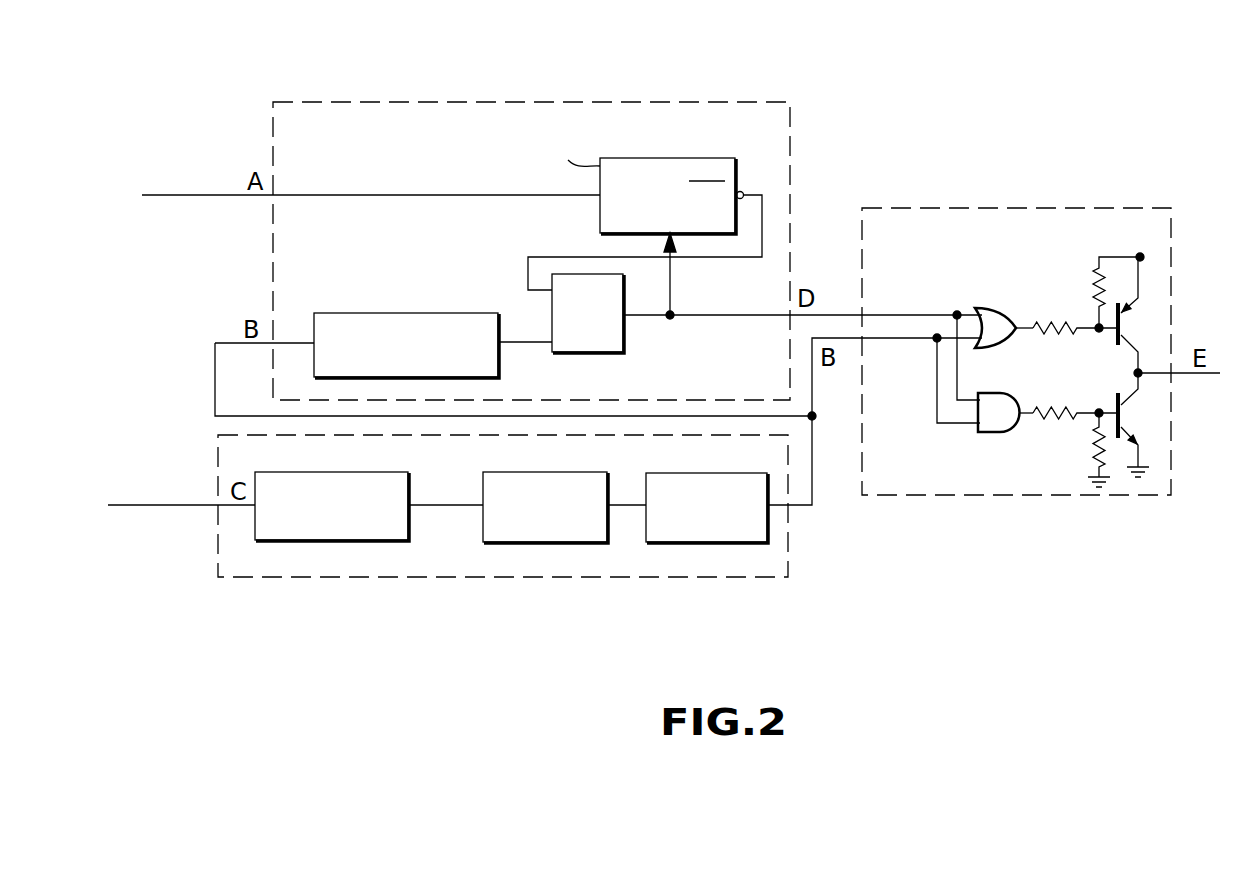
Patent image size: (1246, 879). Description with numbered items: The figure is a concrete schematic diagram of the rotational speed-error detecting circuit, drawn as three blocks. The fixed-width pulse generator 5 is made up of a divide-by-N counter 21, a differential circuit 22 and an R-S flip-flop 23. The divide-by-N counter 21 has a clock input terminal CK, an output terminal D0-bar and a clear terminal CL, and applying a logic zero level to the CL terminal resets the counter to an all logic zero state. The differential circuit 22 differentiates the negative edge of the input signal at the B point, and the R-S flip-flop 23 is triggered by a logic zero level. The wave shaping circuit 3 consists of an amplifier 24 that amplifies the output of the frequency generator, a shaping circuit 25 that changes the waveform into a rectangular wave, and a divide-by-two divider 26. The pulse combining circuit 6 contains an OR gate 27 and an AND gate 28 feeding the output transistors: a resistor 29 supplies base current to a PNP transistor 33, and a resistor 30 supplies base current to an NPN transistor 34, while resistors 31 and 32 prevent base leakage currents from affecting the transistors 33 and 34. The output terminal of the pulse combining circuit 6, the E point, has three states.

The wave shaping circuit 3 is at (647, 577).
The fixed-width pulse generator 5 is at (508, 102).
The pulse combining circuit 6 is at (955, 208).
The divide-by-N counter 21 is at (600, 220).
The differential circuit 22 is at (355, 313).
The R-S flip-flop 23 is at (589, 352).
The amplifier 24 is at (386, 472).
The shaping circuit 25 is at (573, 472).
The divider 26 is at (715, 473).
The OR gate 27 is at (994, 346).
The AND gate 28 is at (998, 405).
The resistor 29 is at (1057, 335).
The resistor 30 is at (1048, 400).
The resistor 31 is at (1090, 287).
The resistor 32 is at (1088, 450).
The PNP transistor 33 is at (1142, 317).
The NPN transistor 34 is at (1142, 425).